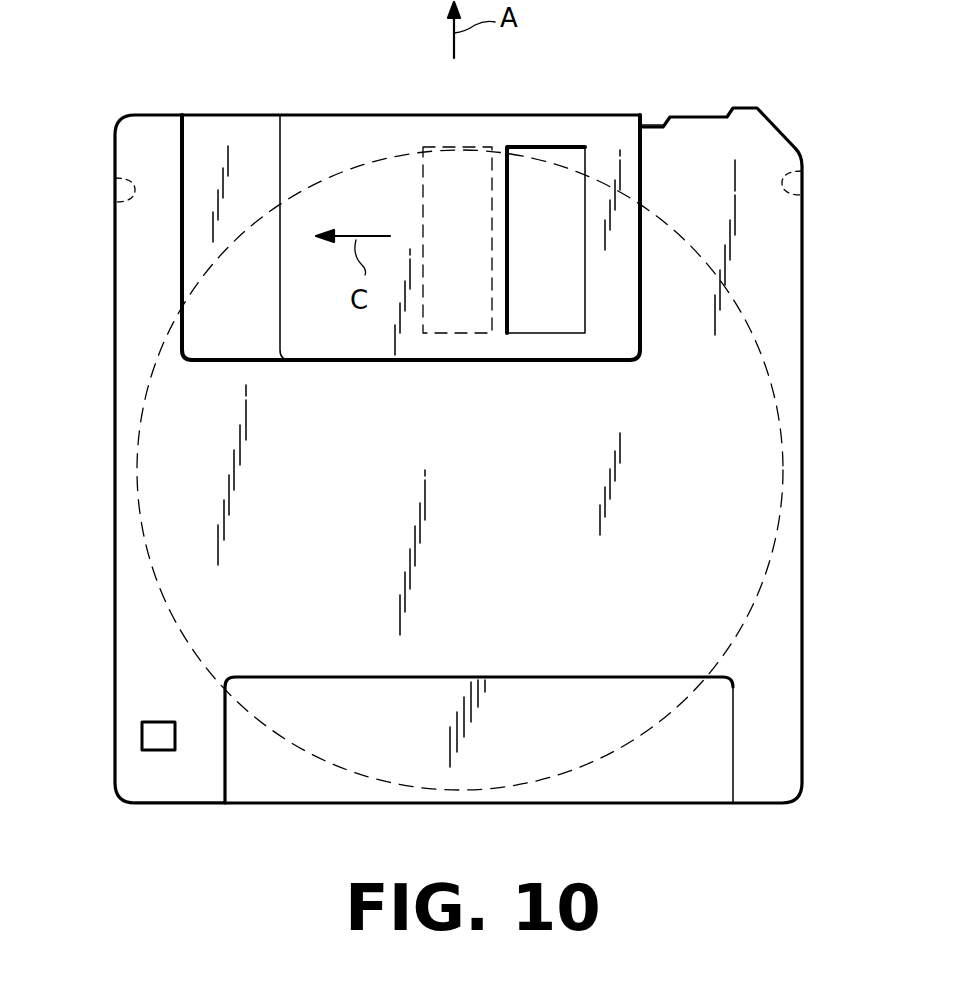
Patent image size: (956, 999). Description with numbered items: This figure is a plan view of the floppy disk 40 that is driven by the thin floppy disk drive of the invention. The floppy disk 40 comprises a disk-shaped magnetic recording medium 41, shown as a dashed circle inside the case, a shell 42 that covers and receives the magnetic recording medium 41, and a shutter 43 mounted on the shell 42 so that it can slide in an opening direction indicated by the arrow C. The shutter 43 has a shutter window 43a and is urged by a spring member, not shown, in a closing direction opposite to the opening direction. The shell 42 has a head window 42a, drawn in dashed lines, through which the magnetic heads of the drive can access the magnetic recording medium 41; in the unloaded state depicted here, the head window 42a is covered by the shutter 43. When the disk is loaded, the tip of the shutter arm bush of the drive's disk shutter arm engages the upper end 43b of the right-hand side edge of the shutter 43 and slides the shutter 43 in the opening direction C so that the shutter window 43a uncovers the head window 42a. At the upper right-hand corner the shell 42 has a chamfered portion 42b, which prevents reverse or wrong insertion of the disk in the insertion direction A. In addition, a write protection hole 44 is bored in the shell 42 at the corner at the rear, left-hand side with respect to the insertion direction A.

The floppy disk 40 is at (188, 810).
The magnetic recording medium 41 is at (757, 560).
The shell 42 is at (792, 512).
The head window 42a is at (492, 170).
The chamfered portion 42b is at (775, 128).
The shutter 43 is at (365, 335).
The shutter window 43a is at (507, 325).
The upper end of the right-hand side edge of the shutter 43b is at (643, 125).
The write protection hole 44 is at (142, 738).